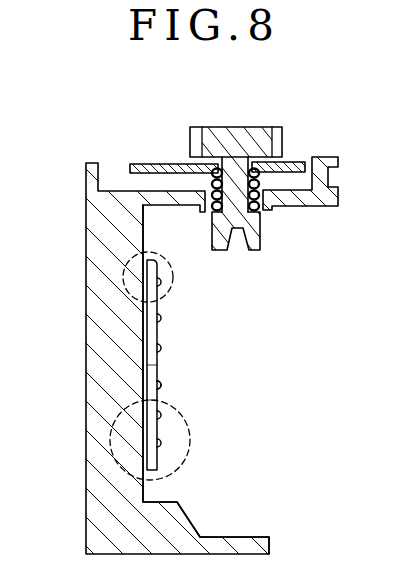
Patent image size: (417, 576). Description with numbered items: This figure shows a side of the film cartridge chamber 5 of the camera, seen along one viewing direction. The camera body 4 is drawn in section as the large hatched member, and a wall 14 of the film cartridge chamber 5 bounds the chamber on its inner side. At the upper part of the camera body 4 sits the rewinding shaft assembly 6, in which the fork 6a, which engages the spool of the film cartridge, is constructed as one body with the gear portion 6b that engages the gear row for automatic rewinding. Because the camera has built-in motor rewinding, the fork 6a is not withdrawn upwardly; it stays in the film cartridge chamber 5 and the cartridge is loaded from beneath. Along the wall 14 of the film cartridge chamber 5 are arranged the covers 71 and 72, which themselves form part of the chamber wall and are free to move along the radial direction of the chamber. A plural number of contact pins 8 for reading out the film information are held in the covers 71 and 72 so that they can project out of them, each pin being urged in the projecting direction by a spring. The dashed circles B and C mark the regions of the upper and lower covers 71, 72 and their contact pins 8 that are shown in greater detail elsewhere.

The camera body 4 is at (87, 520).
The film cartridge chamber 5 is at (167, 489).
The wall of the film cartridge chamber 14 is at (145, 228).
The cover 71 is at (158, 330).
The contact pins 8 is at (161, 385).
The cover 72 is at (160, 392).
The fork and gear portion body 6 is at (208, 288).
The fork 6a is at (260, 228).
The gear portion 6b is at (190, 138).
The detail region B is at (174, 277).
The detail region C is at (190, 447).